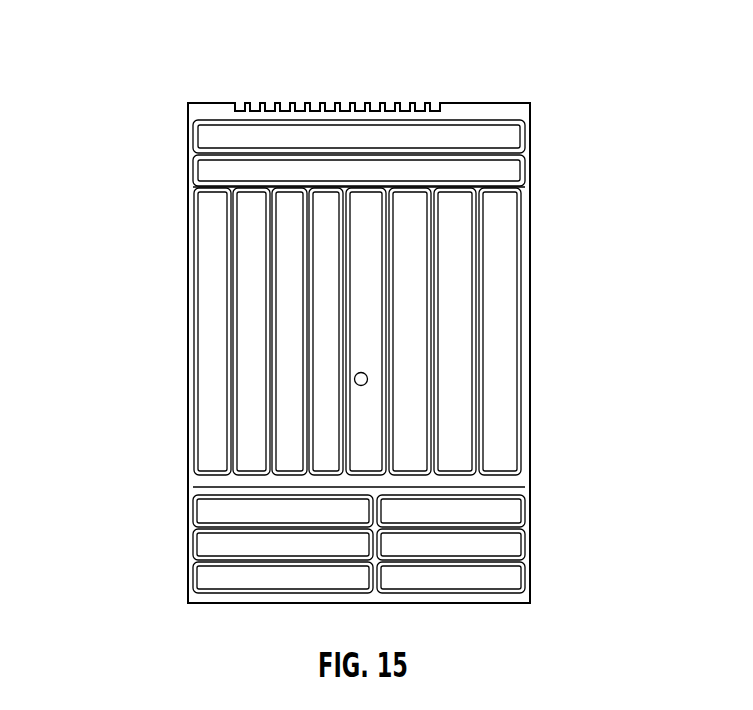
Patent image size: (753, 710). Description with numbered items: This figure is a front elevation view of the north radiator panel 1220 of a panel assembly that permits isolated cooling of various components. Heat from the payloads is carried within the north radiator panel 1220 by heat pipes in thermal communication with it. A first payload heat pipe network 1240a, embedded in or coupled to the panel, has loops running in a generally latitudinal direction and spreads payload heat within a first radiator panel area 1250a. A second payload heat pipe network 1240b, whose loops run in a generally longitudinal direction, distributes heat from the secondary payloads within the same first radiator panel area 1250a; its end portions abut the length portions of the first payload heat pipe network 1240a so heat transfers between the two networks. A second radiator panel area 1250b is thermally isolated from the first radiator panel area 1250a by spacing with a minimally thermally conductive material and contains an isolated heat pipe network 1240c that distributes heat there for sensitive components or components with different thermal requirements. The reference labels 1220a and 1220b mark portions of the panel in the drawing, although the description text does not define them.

The north radiator panel 1220 is at (171, 73).
The upper portion of tray 1220a is at (166, 195).
The lower portion of tray 1220b is at (166, 573).
The first payload heat pipe network 1240a is at (524, 136).
The second payload heat pipe network 1240b is at (525, 295).
The isolated heat pipe network 1240c is at (527, 548).
The first radiator panel area 1250a is at (526, 190).
The second radiator panel area 1250b is at (522, 487).